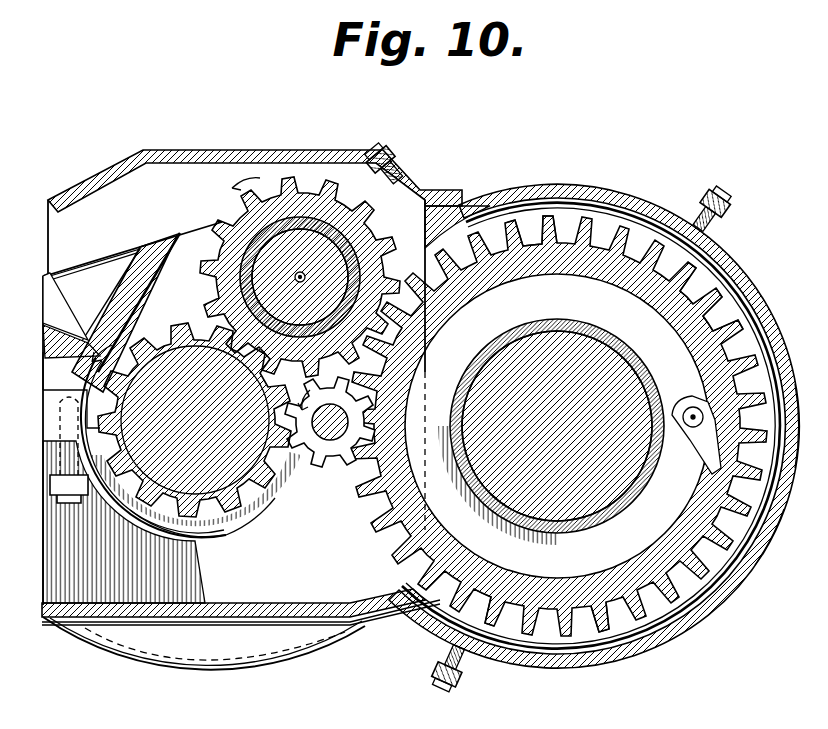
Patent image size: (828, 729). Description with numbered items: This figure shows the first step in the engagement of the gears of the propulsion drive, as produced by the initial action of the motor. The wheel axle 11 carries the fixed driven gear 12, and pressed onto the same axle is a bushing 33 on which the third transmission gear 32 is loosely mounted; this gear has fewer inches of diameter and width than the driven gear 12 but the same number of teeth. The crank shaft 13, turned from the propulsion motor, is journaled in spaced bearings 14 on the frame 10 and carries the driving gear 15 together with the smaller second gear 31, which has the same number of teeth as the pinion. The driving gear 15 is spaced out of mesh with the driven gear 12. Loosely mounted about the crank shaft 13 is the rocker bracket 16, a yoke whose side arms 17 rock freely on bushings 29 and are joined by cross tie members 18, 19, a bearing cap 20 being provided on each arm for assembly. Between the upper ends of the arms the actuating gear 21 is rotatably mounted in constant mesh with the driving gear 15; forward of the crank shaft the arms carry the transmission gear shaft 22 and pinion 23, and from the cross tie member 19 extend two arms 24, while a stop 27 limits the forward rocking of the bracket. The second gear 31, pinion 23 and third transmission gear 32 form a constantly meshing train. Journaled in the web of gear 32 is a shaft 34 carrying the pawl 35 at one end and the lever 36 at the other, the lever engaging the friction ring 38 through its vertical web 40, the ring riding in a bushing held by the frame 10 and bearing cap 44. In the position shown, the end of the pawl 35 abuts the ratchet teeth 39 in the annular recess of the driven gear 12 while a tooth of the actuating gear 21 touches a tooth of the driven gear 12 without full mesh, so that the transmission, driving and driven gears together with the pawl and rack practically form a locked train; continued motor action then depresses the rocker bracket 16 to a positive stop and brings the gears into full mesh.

The frame 10 is at (310, 622).
The wheel axle 11 is at (610, 332).
The driven gear 12 is at (648, 622).
The crank shaft 13 is at (192, 500).
The bearings 14 is at (203, 580).
The driving gear 15 is at (110, 322).
The rocker bracket 16 is at (197, 243).
The side arms 17 is at (157, 247).
The cross tie member 18 is at (402, 228).
The cross tie member 19 is at (115, 285).
The bearing cap 20 is at (193, 542).
The actuating gear 21 is at (297, 182).
The transmission gear shaft 22 is at (338, 445).
The pinion 23 is at (322, 468).
The arms 24 is at (52, 287).
The stop 27 is at (475, 232).
The bushings 29 is at (266, 522).
The second gear 31 is at (186, 326).
The third transmission gear 32 is at (686, 316).
The bushing 33 is at (516, 333).
The shaft 34 is at (700, 383).
The pawl 35 is at (742, 540).
The lever 36 is at (722, 350).
The friction ring 38 is at (786, 482).
The ratchet teeth 39 is at (600, 245).
The vertical web 40 is at (797, 378).
The bearing cap 44 is at (716, 604).